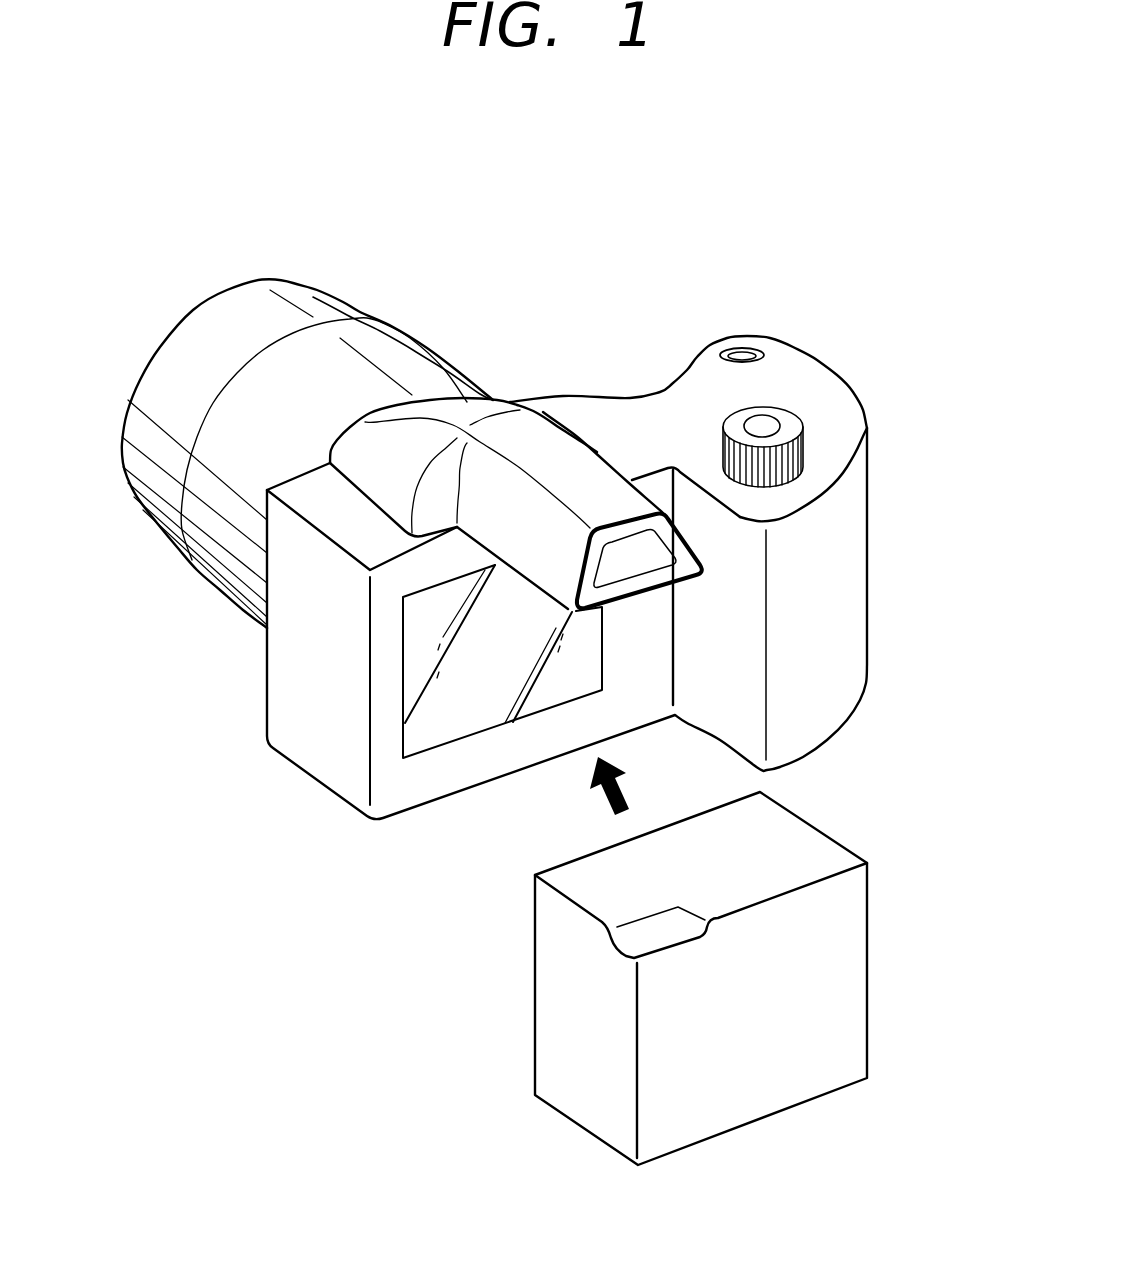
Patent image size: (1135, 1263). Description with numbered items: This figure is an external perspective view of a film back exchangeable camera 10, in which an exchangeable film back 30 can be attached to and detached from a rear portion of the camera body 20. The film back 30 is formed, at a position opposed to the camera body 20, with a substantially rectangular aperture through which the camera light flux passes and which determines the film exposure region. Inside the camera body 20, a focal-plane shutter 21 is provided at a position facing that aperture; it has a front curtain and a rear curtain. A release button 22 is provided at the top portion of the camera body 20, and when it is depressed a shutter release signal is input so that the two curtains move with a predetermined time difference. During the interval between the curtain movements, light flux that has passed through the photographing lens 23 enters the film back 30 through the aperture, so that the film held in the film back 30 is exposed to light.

The film back exchangeable camera 10 is at (866, 139).
The camera body 20 is at (681, 316).
The focal-plane shutter 21 is at (431, 733).
The release button 22 is at (740, 353).
The photographing lens 23 is at (285, 319).
The film back 30 is at (858, 840).